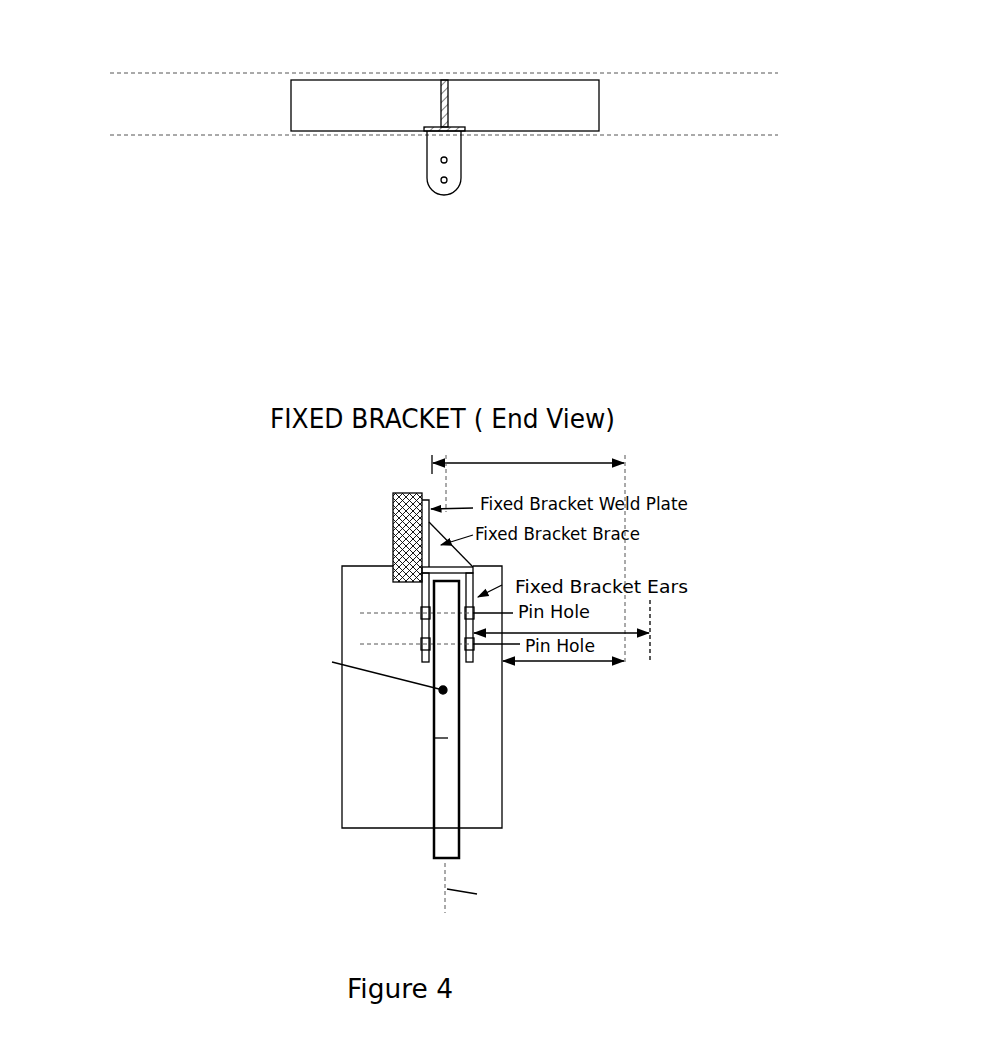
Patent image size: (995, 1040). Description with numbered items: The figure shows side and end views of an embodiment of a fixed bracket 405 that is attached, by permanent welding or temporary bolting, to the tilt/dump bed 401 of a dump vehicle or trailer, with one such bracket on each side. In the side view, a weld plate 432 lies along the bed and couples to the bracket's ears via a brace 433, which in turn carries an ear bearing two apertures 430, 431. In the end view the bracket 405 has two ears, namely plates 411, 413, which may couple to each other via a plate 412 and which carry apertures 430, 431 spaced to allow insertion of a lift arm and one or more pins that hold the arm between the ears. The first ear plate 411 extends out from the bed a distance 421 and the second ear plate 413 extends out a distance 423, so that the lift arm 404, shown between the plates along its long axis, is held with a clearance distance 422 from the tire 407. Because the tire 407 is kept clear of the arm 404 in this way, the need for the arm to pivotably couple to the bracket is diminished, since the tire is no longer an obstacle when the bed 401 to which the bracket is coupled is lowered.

The bracket 405 is at (444, 74).
The weld plate 432 is at (584, 98).
The brace 433 is at (436, 112).
The aperture 431 is at (452, 160).
The aperture 430 is at (452, 180).
The tilt/dump bed 401 is at (392, 521).
The tire 407 is at (372, 715).
The plate 412 is at (447, 568).
The ear 411 is at (429, 599).
The ear 413 is at (473, 657).
The arm 404 is at (434, 722).
The distance 421 is at (473, 463).
The distance 423 is at (627, 637).
The clearance distance 422 is at (562, 661).